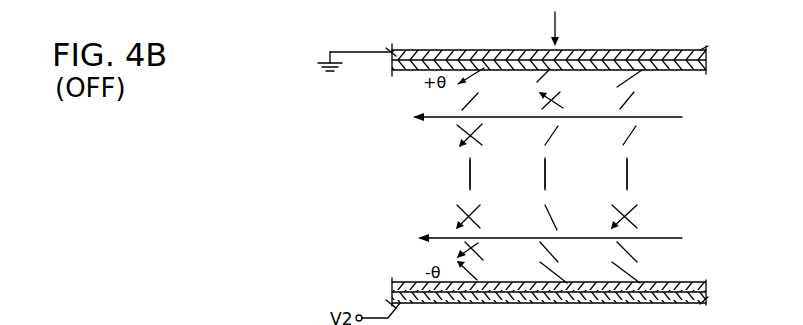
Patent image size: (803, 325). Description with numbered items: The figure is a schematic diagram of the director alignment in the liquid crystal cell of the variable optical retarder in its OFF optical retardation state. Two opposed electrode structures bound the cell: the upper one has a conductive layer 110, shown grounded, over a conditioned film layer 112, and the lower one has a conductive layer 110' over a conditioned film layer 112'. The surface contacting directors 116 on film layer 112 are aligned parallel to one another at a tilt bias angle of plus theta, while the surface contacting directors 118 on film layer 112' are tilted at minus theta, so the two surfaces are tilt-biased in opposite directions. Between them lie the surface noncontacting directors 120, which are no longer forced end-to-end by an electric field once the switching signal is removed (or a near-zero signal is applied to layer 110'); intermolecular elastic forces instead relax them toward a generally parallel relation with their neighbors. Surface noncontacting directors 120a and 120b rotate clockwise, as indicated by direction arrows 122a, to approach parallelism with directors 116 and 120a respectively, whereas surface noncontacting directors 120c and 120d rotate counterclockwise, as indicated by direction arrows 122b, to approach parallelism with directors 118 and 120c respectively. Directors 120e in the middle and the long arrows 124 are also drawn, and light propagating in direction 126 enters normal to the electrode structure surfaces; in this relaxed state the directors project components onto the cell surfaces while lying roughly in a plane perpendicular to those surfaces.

The conductive layer 110 is at (538, 43).
The film layer 112 is at (533, 79).
The surface contacting directors 116 is at (533, 50).
The direction of light propagation 126 is at (556, 22).
The surface noncontacting directors 120 is at (452, 172).
The surface noncontacting directors 120a is at (634, 98).
The surface noncontacting directors 120b is at (556, 133).
The surface noncontacting directors 120c is at (553, 252).
The surface noncontacting directors 120d is at (552, 216).
The ions at rest in middle 120e is at (470, 174).
The direction arrows 122a is at (560, 103).
The direction arrows 122b is at (470, 212).
The gas flow direction 124 is at (682, 117).
The surface contacting directors 118 is at (470, 270).
The conductive layer 110' is at (516, 289).
The film layer 112' is at (534, 273).